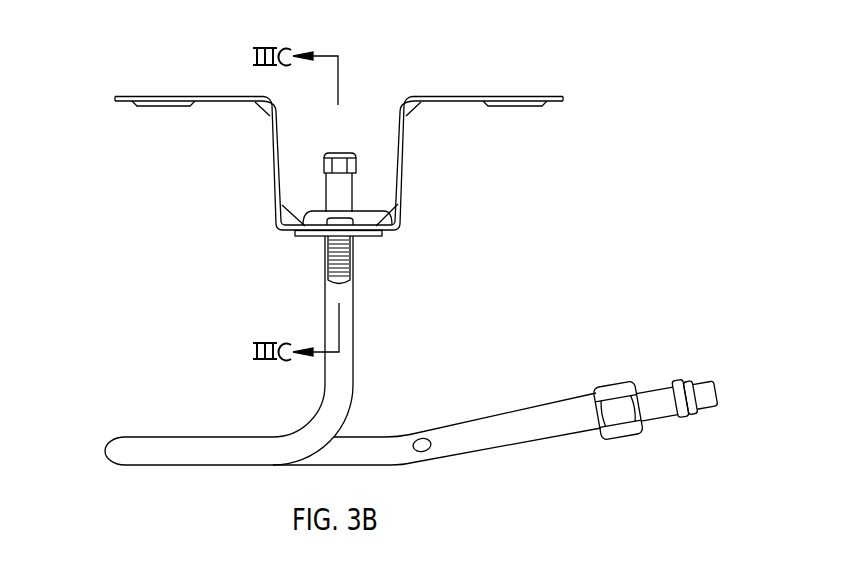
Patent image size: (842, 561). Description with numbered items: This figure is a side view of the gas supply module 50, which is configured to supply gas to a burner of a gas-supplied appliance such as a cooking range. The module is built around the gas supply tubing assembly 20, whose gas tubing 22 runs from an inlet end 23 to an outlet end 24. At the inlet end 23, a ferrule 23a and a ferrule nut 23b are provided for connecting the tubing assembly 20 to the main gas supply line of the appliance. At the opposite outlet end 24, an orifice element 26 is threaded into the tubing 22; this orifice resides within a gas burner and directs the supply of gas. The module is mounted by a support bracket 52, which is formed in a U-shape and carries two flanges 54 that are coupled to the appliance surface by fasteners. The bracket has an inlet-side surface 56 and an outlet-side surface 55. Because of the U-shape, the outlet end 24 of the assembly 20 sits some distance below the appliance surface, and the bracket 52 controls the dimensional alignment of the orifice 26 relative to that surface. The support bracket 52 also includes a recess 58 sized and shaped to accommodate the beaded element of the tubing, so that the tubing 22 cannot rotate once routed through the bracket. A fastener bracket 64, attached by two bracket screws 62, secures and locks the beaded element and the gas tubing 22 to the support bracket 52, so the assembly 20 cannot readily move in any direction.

The gas supply tubing assembly 20 is at (215, 428).
The gas tubing 22 is at (140, 437).
The inlet end 23 is at (707, 384).
The ferrule 23a is at (680, 382).
The ferrule nut 23b is at (617, 380).
The outlet end 24 is at (337, 188).
The orifice element 26 is at (333, 149).
The gas supply module 50 is at (546, 216).
The support bracket 52 is at (576, 90).
The flanges 54 is at (532, 96).
The outlet-side surface 55 is at (150, 97).
The inlet-side surface 56 is at (128, 103).
The recess 58 is at (373, 216).
The bracket screws 62 is at (303, 221).
The fastener bracket 64 is at (371, 238).